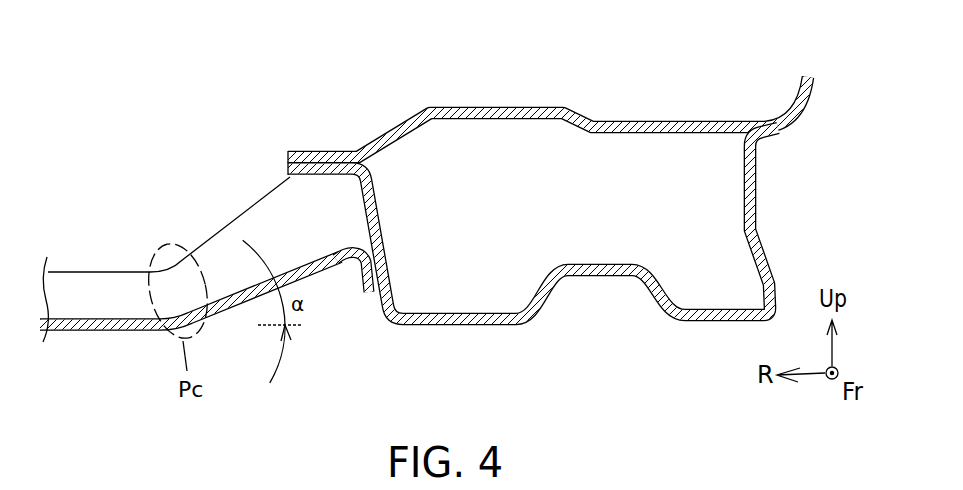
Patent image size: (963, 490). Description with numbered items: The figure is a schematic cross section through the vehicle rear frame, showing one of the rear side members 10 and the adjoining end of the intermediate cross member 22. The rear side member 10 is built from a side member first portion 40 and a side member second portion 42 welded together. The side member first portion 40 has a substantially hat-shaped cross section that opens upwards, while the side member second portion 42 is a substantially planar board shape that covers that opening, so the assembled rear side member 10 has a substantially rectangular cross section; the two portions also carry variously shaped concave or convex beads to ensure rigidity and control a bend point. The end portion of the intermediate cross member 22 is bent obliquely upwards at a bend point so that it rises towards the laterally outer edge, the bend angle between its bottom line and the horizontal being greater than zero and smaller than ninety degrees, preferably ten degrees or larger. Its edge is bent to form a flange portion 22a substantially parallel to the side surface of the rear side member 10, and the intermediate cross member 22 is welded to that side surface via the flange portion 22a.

The rear side member 10 is at (548, 190).
The intermediate cross member 22 is at (208, 245).
The flange portion 22a is at (363, 277).
The side member first portion 40 is at (688, 323).
The side member second portion 42 is at (540, 105).